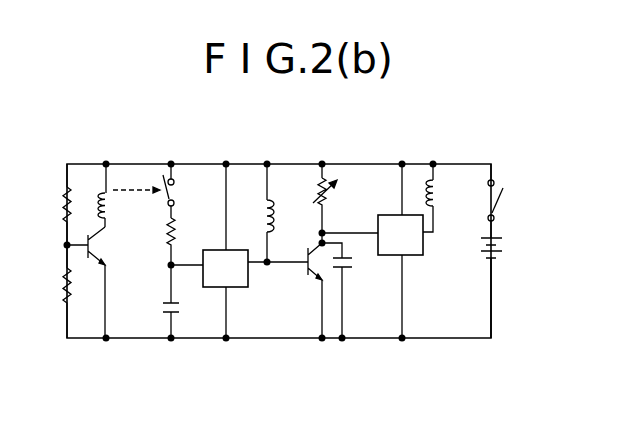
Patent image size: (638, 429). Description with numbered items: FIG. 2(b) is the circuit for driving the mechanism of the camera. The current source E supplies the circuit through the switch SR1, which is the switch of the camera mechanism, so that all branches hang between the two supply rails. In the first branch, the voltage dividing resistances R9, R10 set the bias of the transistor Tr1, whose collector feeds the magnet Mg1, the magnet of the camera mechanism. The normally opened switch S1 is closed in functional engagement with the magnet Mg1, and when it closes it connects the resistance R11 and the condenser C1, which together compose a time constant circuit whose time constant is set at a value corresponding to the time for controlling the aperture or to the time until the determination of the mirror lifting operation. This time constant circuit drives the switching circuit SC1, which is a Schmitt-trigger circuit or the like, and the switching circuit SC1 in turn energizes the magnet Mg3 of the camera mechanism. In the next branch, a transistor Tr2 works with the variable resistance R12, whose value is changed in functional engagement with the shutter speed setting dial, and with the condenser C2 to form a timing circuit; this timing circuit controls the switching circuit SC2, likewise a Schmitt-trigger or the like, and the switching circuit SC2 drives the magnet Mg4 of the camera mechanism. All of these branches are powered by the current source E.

The voltage dividing resistance R9 is at (57, 204).
The voltage dividing resistance R10 is at (56, 291).
The transistor Tr1 is at (96, 246).
The magnet Mg1 is at (129, 195).
The normally opened switch S1 is at (178, 191).
The resistance R11 is at (185, 241).
The condenser C1 is at (181, 301).
The switching circuit SC1 is at (209, 251).
The magnet Mg3 is at (278, 213).
The transistor Tr2 is at (307, 268).
The variable resistance R12 is at (330, 198).
The condenser C2 is at (346, 290).
The switching circuit SC2 is at (372, 251).
The magnet Mg4 is at (446, 198).
The switch SR1 is at (509, 201).
The current source E is at (498, 288).